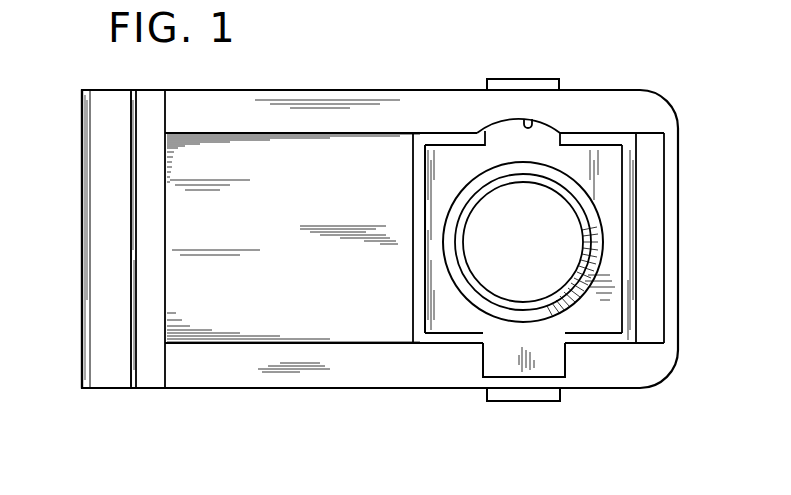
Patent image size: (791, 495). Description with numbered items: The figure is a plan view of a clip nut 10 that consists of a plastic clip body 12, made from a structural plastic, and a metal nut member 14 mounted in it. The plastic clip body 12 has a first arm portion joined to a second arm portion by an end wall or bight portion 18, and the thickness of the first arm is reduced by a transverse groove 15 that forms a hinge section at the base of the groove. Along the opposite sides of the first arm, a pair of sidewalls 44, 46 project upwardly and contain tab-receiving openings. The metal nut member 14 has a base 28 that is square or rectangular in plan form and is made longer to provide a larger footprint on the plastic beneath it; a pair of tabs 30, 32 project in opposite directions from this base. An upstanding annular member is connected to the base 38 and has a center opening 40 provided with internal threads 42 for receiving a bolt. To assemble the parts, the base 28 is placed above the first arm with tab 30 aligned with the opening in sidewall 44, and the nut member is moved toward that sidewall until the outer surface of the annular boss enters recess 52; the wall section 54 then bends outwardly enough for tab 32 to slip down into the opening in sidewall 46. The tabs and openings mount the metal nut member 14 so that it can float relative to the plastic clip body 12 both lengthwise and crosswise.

The clip nut 10 is at (347, 409).
The plastic clip body 12 is at (410, 372).
The metal nut member 14 is at (418, 217).
The transverse groove 15 is at (153, 190).
The end wall or bight portion 18 is at (82, 227).
The base 28 is at (437, 297).
The tab 30 is at (515, 79).
The tab 32 is at (502, 401).
The base 38 is at (460, 195).
The center opening 40 is at (543, 198).
The internal threads 42 is at (572, 262).
The sidewall 44 is at (290, 102).
The sidewall 46 is at (255, 372).
The recess 52 is at (533, 128).
The wall section 54 is at (533, 360).